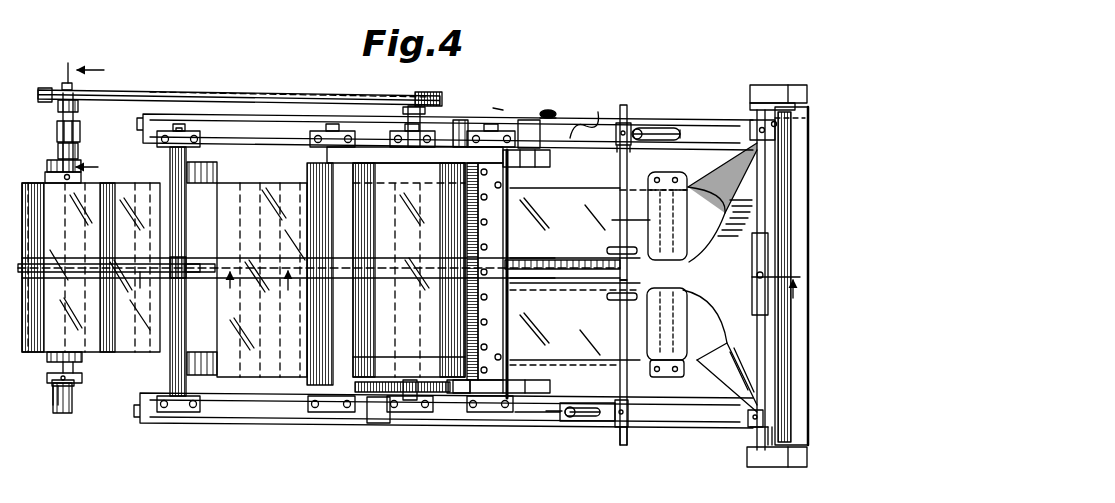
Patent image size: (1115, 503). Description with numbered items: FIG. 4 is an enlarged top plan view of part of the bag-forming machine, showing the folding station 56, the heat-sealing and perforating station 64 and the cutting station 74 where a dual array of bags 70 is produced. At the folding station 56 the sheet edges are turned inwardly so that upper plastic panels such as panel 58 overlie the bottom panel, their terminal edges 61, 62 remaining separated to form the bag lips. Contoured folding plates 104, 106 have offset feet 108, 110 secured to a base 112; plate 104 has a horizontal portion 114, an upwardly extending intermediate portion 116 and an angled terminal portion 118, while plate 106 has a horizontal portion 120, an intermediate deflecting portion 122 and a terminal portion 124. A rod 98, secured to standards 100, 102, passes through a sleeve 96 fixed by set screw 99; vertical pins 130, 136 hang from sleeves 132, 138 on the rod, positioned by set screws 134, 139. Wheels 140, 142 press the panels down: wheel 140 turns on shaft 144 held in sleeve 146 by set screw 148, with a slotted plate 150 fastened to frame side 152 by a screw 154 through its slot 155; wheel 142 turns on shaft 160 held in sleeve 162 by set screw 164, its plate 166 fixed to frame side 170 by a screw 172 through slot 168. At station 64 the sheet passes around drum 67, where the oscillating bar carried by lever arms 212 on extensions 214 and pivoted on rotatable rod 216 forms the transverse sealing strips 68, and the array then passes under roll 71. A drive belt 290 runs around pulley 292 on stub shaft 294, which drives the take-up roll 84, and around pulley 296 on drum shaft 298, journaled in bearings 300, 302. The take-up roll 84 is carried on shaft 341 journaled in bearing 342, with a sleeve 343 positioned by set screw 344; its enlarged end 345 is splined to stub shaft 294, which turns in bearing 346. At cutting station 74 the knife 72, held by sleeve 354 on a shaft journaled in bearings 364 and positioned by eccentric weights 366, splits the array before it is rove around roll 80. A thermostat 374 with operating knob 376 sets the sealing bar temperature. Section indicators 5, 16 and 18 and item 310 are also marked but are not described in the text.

The section line 5 is at (541, 294).
The glass sheet 16 is at (131, 267).
The direction of conveyance 18 is at (90, 112).
The folding station 56 is at (701, 112).
The upper plastic panel 58 is at (563, 215).
The terminal edge 61 is at (542, 262).
The terminal edge 62 is at (537, 292).
The heat-sealing and perforating station 64 is at (496, 106).
The drum 67 is at (411, 371).
The sealing strips 68 is at (398, 206).
The bags 70 is at (283, 192).
The roll 71 is at (315, 360).
The knife 72 is at (208, 266).
The cutting station 74 is at (222, 73).
The roll 80 is at (216, 167).
The take-up roll 84 is at (46, 176).
The sleeve 96 is at (753, 250).
The rod 98 is at (769, 189).
The set screw 99 is at (757, 275).
The standard 100 is at (753, 463).
The standard 102 is at (752, 95).
The folding plate 104 is at (690, 185).
The folding plate 106 is at (698, 273).
The offset foot 108 is at (658, 175).
The offset foot 110 is at (665, 378).
The base 112 is at (563, 355).
The horizontal portion 114 is at (637, 216).
The intermediate portion 116 is at (712, 240).
The terminal portion 118 is at (720, 222).
The horizontal portion 120 is at (676, 333).
The intermediate deflecting portion 122 is at (718, 322).
The terminal portion 124 is at (726, 340).
The vertical pin 130 is at (776, 121).
The sleeve 132 is at (758, 120).
The set screw 134 is at (761, 129).
The vertical pin 136 is at (770, 429).
The sleeve 138 is at (752, 431).
The set screw 139 is at (747, 416).
The wheel 140 is at (607, 250).
The wheel 142 is at (606, 298).
The shaft 144 is at (619, 186).
The sleeve 146 is at (617, 128).
The set screw 148 is at (616, 149).
The slotted plate 150 is at (684, 115).
The frame side 152 is at (688, 122).
The screw 154 is at (638, 128).
The slot 155 is at (680, 135).
The shaft 160 is at (620, 325).
The sleeve 162 is at (613, 428).
The set screw 164 is at (629, 413).
The plate 166 is at (586, 424).
The slot 168 is at (594, 393).
The frame side 170 is at (516, 421).
The screw 172 is at (540, 411).
The lever arm 212 is at (480, 147).
The extension 214 is at (515, 162).
The rotatable rod 216 is at (465, 167).
The drive belt 290 is at (285, 85).
The pulley 292 is at (45, 90).
The stub shaft 294 is at (79, 108).
The pulley 296 is at (396, 94).
The shaft 298 is at (410, 121).
The bearing 300 is at (410, 142).
The bearing 302 is at (393, 410).
The block 310 is at (428, 398).
The shaft 341 is at (81, 178).
The bearing 342 is at (74, 409).
The sleeve 343 is at (47, 379).
The set screw 344 is at (79, 377).
The enlarged end 345 is at (58, 153).
The bearing 346 is at (58, 131).
The sleeve 354 is at (183, 278).
The bearings 364 is at (172, 135).
The eccentric weights 366 is at (198, 133).
The thermostat 374 is at (530, 123).
The operating knob 376 is at (552, 110).